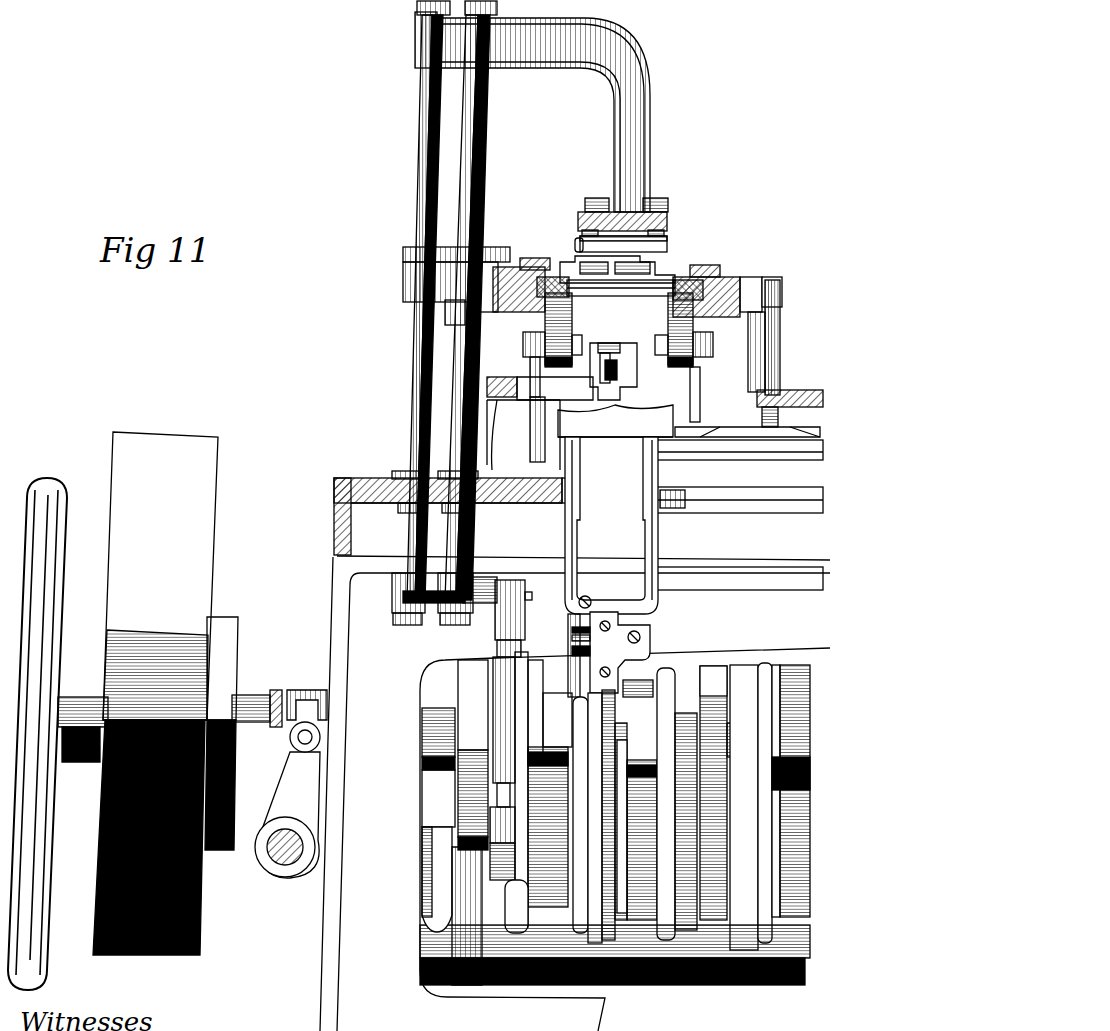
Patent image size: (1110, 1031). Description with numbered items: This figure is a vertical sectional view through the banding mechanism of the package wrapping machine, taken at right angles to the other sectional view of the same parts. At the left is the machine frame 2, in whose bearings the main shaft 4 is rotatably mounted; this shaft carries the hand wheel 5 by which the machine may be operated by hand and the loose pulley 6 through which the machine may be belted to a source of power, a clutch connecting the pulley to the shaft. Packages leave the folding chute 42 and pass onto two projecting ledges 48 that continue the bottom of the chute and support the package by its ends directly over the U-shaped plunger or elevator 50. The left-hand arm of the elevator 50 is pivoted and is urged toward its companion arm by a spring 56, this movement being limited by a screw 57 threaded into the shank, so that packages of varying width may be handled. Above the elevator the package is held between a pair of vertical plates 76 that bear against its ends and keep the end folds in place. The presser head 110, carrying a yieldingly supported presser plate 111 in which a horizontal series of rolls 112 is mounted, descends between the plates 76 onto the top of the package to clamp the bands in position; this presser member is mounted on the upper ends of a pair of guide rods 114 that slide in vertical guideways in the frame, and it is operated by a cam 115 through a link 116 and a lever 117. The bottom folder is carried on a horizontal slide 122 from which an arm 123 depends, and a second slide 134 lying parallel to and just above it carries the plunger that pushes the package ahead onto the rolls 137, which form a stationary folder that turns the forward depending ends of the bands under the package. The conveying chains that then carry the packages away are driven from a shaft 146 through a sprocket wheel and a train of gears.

The machine frame 2 is at (336, 493).
The main shaft 4 is at (90, 745).
The hand wheel 5 is at (45, 530).
The loose pulley 6 is at (114, 552).
The folding chute 42 is at (724, 440).
The projecting ledges 48 is at (672, 440).
The U-shaped plunger or elevator 50 is at (648, 546).
The spring 56 is at (572, 652).
The screw 57 is at (572, 632).
The vertical plates 76 is at (614, 422).
The presser head 110 is at (668, 218).
The presser plate 111 is at (668, 244).
The rolls 112 is at (577, 244).
The guide rods 114 is at (474, 170).
The cam 115 is at (440, 678).
The link 116 is at (500, 660).
The lever 117 is at (436, 890).
The horizontal slide 122 is at (568, 296).
The arm 123 is at (568, 325).
The slide 134 is at (720, 276).
The rolls 137 is at (657, 267).
The shaft 146 is at (283, 864).